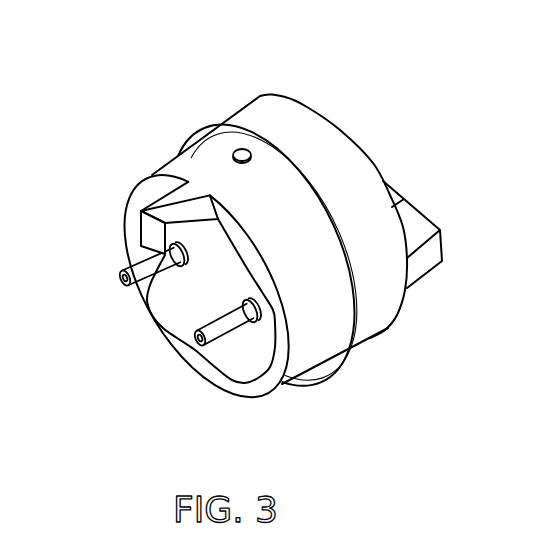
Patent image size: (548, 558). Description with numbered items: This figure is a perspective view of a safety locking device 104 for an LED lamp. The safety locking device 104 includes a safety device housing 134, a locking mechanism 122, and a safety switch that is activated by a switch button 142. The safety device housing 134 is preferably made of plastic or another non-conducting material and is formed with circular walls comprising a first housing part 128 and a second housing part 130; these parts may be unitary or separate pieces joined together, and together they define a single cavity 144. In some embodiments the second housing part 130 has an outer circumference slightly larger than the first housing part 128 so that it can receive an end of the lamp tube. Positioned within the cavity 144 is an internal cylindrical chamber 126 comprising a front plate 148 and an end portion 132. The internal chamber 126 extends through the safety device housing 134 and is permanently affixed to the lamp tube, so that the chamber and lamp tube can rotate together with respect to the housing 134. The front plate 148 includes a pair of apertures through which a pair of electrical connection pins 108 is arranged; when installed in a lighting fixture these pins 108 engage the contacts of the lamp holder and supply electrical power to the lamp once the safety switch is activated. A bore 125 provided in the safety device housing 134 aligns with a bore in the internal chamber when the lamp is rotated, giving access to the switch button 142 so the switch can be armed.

The safety locking device 104 is at (157, 54).
The electrical connection pins 108 is at (118, 283).
The locking mechanism 122 is at (167, 208).
The bore 125 is at (283, 157).
The internal cylindrical chamber 126 is at (172, 317).
The first housing part 128 is at (183, 163).
The second housing part 130 is at (280, 117).
The end portion 132 is at (415, 214).
The safety device housing 134 is at (350, 130).
The switch button 142 is at (242, 148).
The cavity 144 is at (263, 385).
The front plate 148 is at (187, 280).